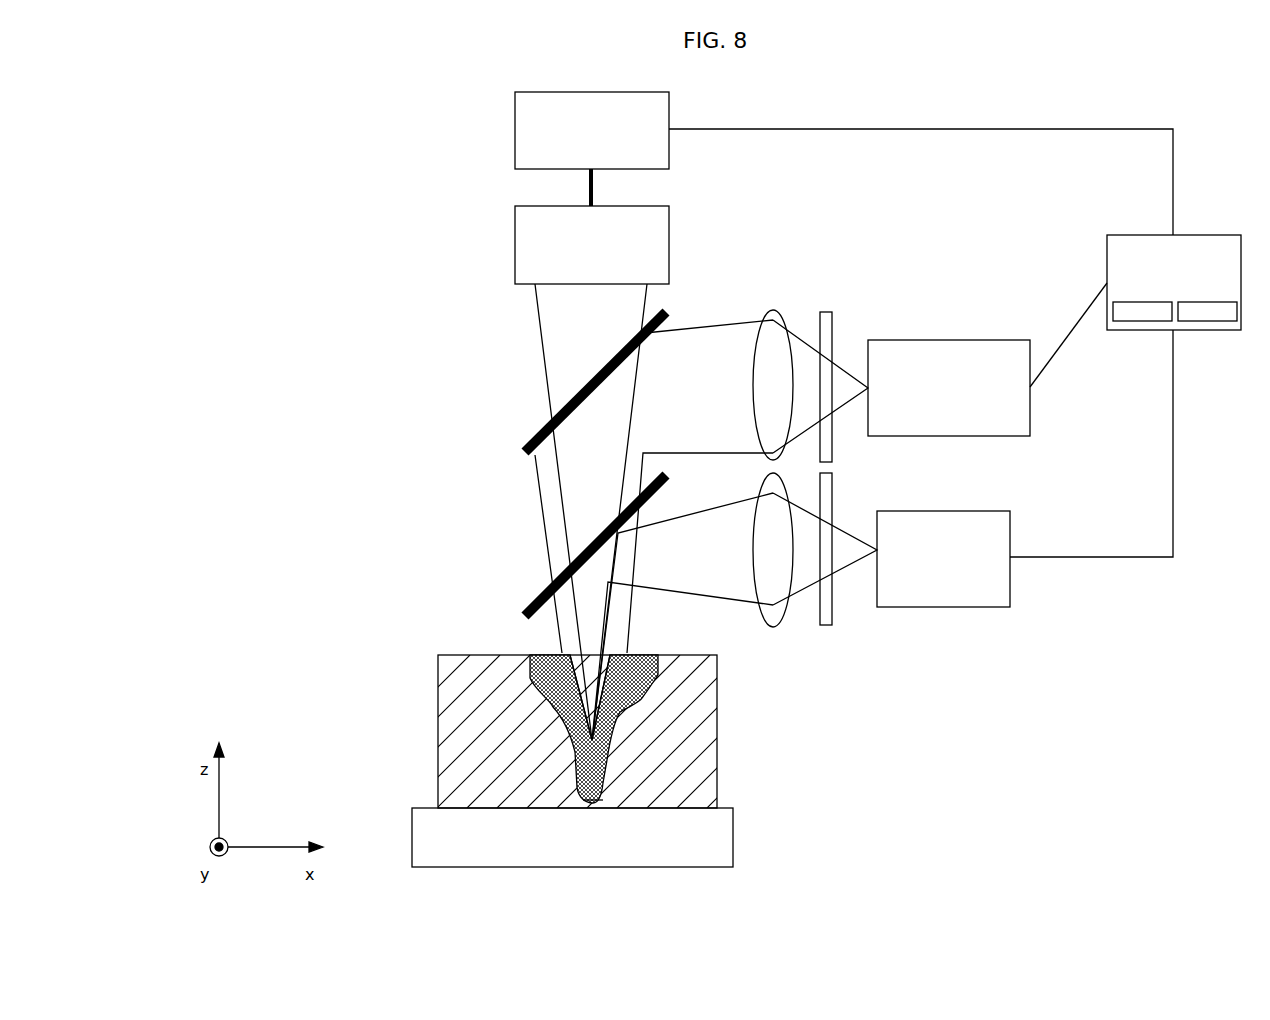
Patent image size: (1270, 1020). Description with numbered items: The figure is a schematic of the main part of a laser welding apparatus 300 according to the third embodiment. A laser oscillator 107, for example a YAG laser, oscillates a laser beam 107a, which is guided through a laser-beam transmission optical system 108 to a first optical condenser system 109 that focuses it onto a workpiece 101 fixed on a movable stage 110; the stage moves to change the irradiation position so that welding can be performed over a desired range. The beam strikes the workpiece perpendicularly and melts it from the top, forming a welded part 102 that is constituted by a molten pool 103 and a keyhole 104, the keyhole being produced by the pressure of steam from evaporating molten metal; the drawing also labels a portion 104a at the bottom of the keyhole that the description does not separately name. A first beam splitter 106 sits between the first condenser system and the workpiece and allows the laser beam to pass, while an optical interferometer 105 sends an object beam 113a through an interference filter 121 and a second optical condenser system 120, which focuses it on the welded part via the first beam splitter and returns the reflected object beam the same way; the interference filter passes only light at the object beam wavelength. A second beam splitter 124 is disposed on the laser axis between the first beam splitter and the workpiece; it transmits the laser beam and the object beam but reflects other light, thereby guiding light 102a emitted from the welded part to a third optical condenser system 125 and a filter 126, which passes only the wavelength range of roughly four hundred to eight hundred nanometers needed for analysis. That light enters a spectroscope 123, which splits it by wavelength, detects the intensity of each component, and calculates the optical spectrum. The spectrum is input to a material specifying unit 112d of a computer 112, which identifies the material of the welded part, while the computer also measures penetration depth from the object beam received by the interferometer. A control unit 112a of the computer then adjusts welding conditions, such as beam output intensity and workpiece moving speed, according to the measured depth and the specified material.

The laser welding apparatus 300 is at (352, 183).
The laser oscillator 107 is at (669, 94).
The laser-beam transmission optical system 108 is at (590, 181).
The first optical condenser system 109 is at (515, 250).
The laser beam 107a is at (560, 315).
The first beam splitter 106 is at (667, 312).
The object beam 113a is at (728, 322).
The second optical condenser system 120 is at (775, 310).
The interference filter 121 is at (826, 312).
The optical interferometer 105 is at (997, 340).
The computer 112 is at (1185, 235).
The control unit 112a is at (1130, 321).
The material specifying unit 112d is at (1217, 321).
The second beam splitter 124 is at (552, 543).
The light emitted from the welded part 102a is at (688, 577).
The third optical condenser system 125 is at (778, 627).
The filter 126 is at (826, 626).
The spectroscope 123 is at (970, 607).
The workpiece 101 is at (438, 711).
The movable stage 110 is at (412, 813).
The welded part 102 is at (704, 741).
The molten pool 103 is at (653, 678).
The keyhole 104 is at (597, 750).
The keyhole bottom 104a is at (593, 802).